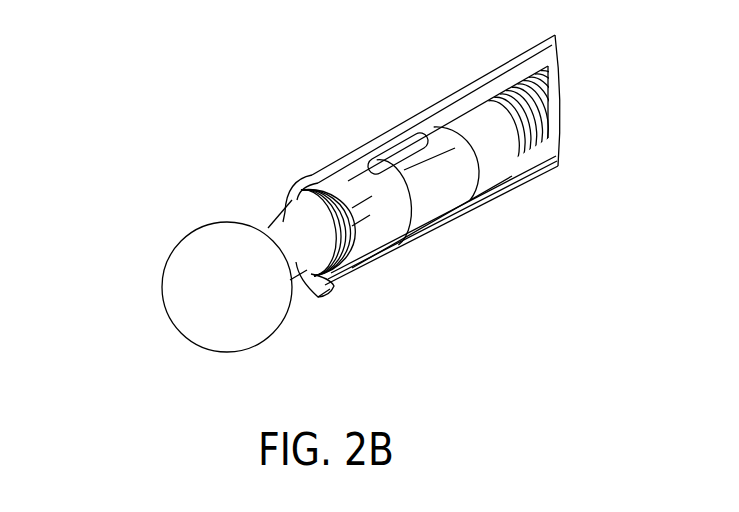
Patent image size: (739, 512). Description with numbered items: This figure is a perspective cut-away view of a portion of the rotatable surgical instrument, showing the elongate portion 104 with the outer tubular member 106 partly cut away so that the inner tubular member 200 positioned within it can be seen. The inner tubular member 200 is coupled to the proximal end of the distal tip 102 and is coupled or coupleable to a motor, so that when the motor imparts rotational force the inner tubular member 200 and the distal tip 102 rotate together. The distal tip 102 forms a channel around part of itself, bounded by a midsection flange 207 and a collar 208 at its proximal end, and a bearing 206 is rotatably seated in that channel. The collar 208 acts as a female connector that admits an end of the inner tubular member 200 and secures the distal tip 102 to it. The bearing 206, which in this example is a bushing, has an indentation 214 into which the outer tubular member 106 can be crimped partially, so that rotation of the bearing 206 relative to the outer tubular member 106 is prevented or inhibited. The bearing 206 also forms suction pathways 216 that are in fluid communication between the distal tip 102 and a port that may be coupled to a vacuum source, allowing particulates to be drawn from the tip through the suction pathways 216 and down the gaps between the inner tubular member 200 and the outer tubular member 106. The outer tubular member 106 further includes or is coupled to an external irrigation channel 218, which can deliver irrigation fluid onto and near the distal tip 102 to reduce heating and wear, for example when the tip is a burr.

The distal tip 102 is at (118, 136).
The elongate portion 104 is at (406, 72).
The outer tubular member 106 is at (495, 192).
The inner tubular member 200 is at (540, 98).
The bearing 206 is at (407, 148).
The midsection flange 207 is at (302, 215).
The collar 208 is at (481, 122).
The indentation 214 is at (370, 168).
The suction pathways 216 is at (370, 207).
The irrigation channel 218 is at (318, 288).